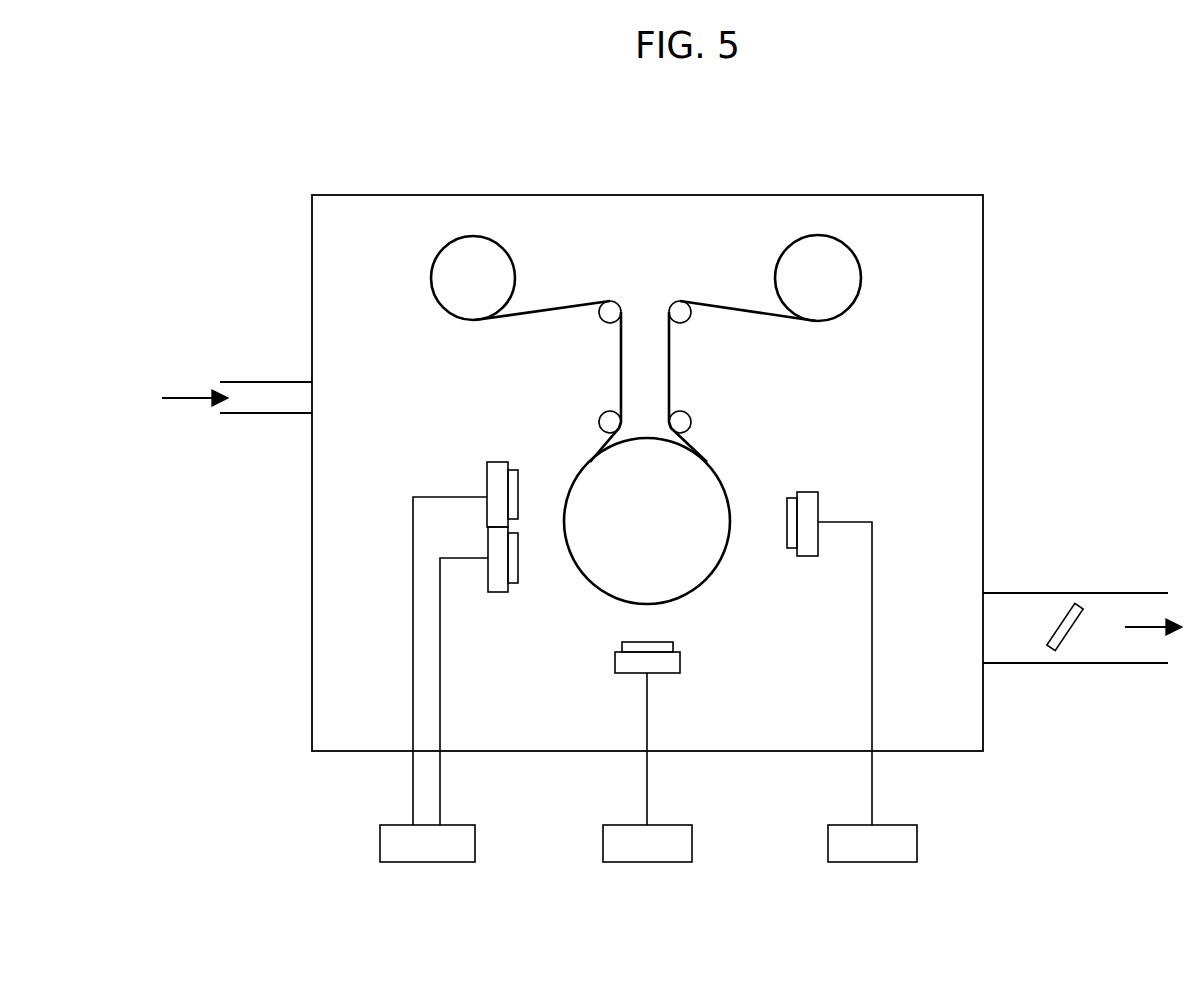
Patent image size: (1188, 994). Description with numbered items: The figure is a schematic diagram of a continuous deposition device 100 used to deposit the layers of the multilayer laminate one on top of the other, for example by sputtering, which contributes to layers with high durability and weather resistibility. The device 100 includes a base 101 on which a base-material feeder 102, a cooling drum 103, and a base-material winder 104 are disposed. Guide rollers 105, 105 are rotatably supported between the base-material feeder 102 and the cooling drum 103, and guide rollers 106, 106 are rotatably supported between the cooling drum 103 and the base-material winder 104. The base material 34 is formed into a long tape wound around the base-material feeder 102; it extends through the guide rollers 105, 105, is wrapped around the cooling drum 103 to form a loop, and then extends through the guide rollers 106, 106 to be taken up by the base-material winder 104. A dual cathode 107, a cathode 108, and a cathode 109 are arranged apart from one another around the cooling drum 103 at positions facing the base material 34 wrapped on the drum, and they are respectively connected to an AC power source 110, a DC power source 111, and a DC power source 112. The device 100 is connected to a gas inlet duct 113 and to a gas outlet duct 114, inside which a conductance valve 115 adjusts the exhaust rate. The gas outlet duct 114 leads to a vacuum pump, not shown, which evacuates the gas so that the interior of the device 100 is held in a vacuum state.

The continuous deposition device 100 is at (1038, 208).
The base 101 is at (983, 328).
The base-material feeder 102 is at (468, 253).
The base-material winder 104 is at (802, 252).
The base material 34 is at (555, 307).
The guide rollers 105 is at (607, 317).
The guide rollers 106 is at (688, 318).
The cooling drum 103 is at (692, 565).
The dual cathode 107 is at (487, 472).
The cathode 108 is at (625, 665).
The cathode 109 is at (812, 505).
The AC power source 110 is at (470, 855).
The DC power source 111 is at (690, 845).
The DC power source 112 is at (912, 845).
The gas inlet duct 113 is at (262, 382).
The gas outlet duct 114 is at (1122, 663).
The conductance valve 115 is at (1075, 630).